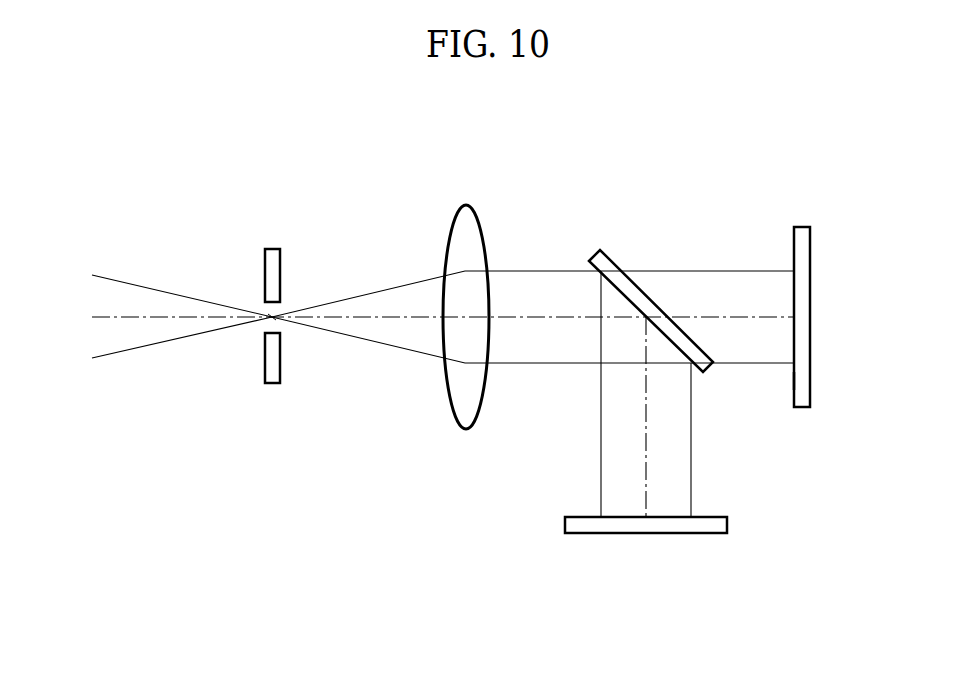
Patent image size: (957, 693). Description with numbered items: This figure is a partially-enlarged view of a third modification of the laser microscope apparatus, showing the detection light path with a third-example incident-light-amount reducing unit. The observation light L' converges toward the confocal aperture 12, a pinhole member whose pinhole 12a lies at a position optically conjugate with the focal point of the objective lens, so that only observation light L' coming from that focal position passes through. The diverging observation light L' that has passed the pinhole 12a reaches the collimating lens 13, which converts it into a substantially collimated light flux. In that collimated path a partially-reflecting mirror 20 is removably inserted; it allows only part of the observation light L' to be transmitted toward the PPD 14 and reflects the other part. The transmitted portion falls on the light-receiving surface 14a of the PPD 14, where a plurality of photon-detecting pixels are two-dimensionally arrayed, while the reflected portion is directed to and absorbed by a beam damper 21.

The confocal aperture 12 is at (270, 248).
The pinhole 12a is at (260, 322).
The collimating lens 13 is at (466, 205).
The observation light L' is at (443, 354).
The partially-reflecting mirror 20 is at (613, 257).
The PPD 14 is at (801, 227).
The light-receiving surface 14a is at (794, 380).
The beam damper 21 is at (565, 520).